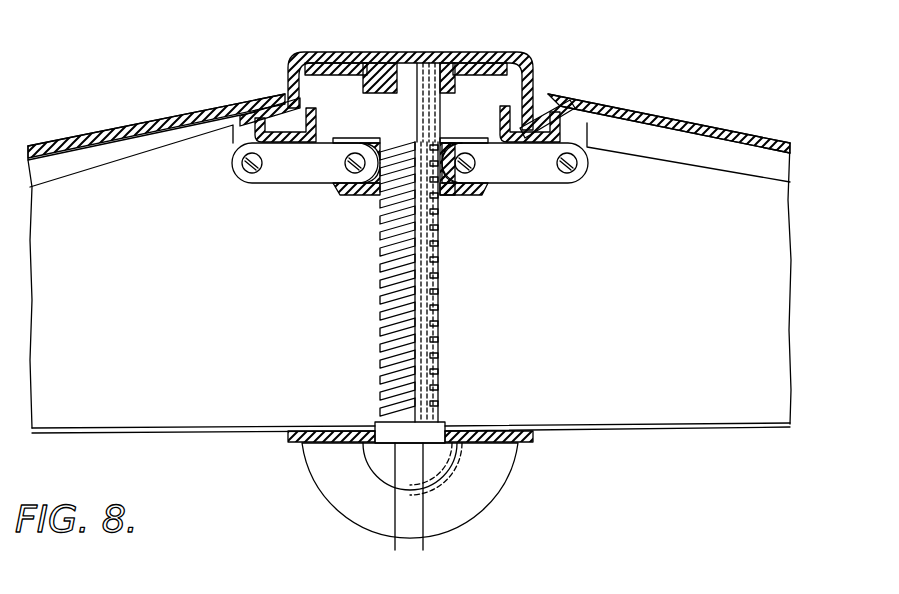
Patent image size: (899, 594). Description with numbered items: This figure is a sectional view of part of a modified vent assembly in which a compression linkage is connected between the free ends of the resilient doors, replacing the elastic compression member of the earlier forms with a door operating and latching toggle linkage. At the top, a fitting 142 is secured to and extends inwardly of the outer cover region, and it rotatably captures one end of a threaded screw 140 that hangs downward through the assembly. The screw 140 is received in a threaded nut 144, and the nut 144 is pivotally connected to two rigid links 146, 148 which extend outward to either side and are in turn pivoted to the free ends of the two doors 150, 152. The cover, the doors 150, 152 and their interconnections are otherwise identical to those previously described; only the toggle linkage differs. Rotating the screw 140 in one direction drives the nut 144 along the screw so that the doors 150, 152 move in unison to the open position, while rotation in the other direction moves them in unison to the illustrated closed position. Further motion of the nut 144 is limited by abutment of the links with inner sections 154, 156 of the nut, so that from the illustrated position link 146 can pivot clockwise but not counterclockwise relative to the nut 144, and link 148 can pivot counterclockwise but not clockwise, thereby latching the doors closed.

The threaded screw 140 is at (440, 323).
The fitting 142 is at (478, 63).
The threaded nut 144 is at (452, 197).
The rigid link 146 is at (300, 186).
The rigid link 148 is at (554, 186).
The door 150 is at (146, 124).
The door 152 is at (686, 126).
The inner section of the nut 154 is at (356, 198).
The inner section of the nut 156 is at (483, 196).